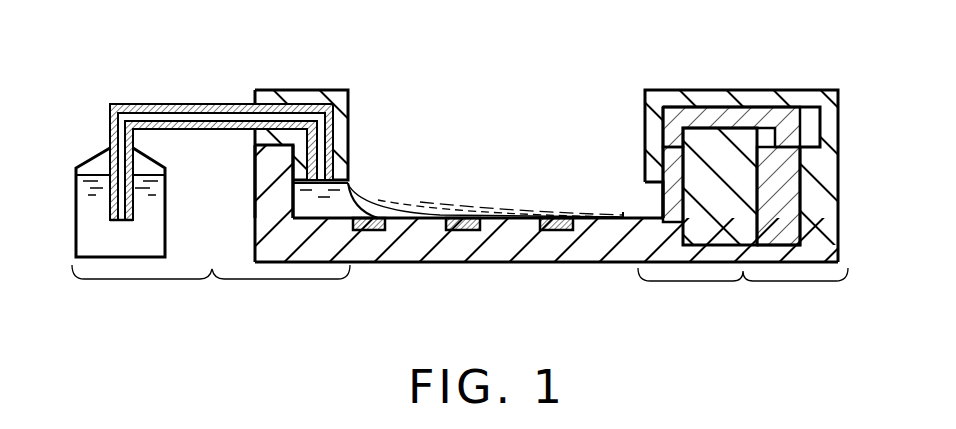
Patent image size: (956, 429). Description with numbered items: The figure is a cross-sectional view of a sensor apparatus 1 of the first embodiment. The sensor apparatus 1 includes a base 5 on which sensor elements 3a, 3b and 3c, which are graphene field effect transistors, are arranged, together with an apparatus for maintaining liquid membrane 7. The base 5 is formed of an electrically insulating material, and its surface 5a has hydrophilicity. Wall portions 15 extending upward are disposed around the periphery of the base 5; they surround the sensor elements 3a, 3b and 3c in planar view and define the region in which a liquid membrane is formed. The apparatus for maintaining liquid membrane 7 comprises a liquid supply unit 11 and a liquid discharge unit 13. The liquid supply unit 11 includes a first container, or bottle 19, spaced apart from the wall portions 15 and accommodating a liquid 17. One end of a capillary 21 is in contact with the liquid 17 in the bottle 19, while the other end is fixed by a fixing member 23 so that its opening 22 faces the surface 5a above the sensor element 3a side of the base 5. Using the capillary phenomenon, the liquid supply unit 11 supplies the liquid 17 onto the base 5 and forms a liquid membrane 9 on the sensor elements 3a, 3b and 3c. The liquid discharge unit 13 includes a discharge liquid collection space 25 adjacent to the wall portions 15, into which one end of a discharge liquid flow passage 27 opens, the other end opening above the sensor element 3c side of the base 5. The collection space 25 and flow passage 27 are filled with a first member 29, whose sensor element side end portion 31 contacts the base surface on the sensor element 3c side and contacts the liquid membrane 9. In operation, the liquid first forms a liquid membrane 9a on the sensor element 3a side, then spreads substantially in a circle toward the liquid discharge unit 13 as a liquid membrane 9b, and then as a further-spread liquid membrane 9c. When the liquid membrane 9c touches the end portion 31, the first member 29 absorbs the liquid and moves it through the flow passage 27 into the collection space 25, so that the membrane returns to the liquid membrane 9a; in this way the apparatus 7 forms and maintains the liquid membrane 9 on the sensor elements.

The sensor apparatus 1 is at (165, 68).
The sensor element 3a is at (368, 231).
The sensor element 3b is at (458, 231).
The sensor element 3c is at (550, 231).
The base 5 is at (617, 253).
The surface of the base 5a is at (623, 216).
The apparatus for maintaining liquid membrane 7 is at (460, 292).
The liquid membrane 9 is at (327, 207).
The liquid membrane 9a is at (360, 203).
The liquid membrane 9b is at (437, 203).
The liquid membrane 9c is at (530, 213).
The liquid supply unit 11 is at (63, 160).
The liquid discharge unit 13 is at (878, 125).
The wall portions 15 is at (257, 177).
The liquid 17 is at (123, 242).
The first container (bottle) 19 is at (92, 258).
The capillary 21 is at (110, 110).
The opening 22 is at (318, 182).
The fixing member 23 is at (257, 138).
The discharge liquid collection space 25 is at (823, 170).
The discharge liquid flow passage 27 is at (800, 117).
The first member 29 is at (807, 212).
The sensor element side end portion 31 is at (673, 207).